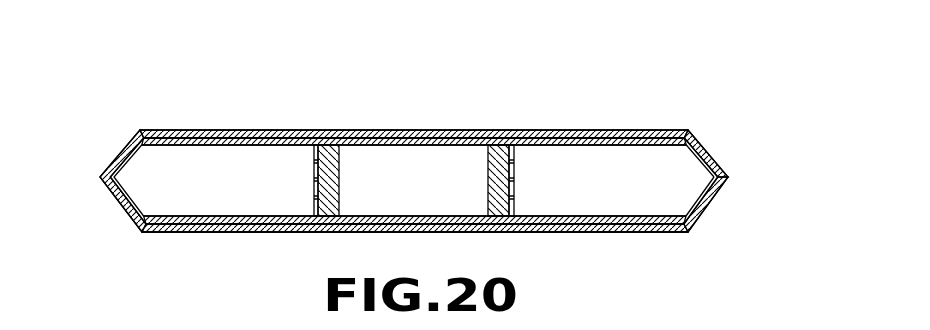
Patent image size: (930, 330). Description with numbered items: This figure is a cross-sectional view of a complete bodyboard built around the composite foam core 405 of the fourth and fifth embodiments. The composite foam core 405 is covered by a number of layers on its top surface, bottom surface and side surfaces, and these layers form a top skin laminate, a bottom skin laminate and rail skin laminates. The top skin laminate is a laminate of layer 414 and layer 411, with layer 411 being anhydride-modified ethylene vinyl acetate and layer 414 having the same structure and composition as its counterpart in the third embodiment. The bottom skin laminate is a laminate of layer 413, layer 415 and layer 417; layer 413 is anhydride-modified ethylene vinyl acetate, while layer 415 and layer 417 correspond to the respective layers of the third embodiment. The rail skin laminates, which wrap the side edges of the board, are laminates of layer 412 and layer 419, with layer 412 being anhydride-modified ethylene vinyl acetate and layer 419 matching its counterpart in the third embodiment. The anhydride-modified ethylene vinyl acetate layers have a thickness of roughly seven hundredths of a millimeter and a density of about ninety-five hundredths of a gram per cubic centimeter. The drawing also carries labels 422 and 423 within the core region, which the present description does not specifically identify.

The composite foam core 405 is at (153, 178).
The top skin laminate layer 411 is at (672, 132).
The top skin laminate layer 414 is at (612, 132).
The rail skin laminate layer 412 is at (725, 170).
The rail skin laminate layer 419 is at (710, 192).
The bottom skin laminate layer 415 is at (662, 228).
The bottom skin laminate layer 413 is at (618, 214).
The bottom skin laminate layer 417 is at (563, 234).
The separator block 422 is at (488, 172).
The separator membrane 423 is at (514, 160).